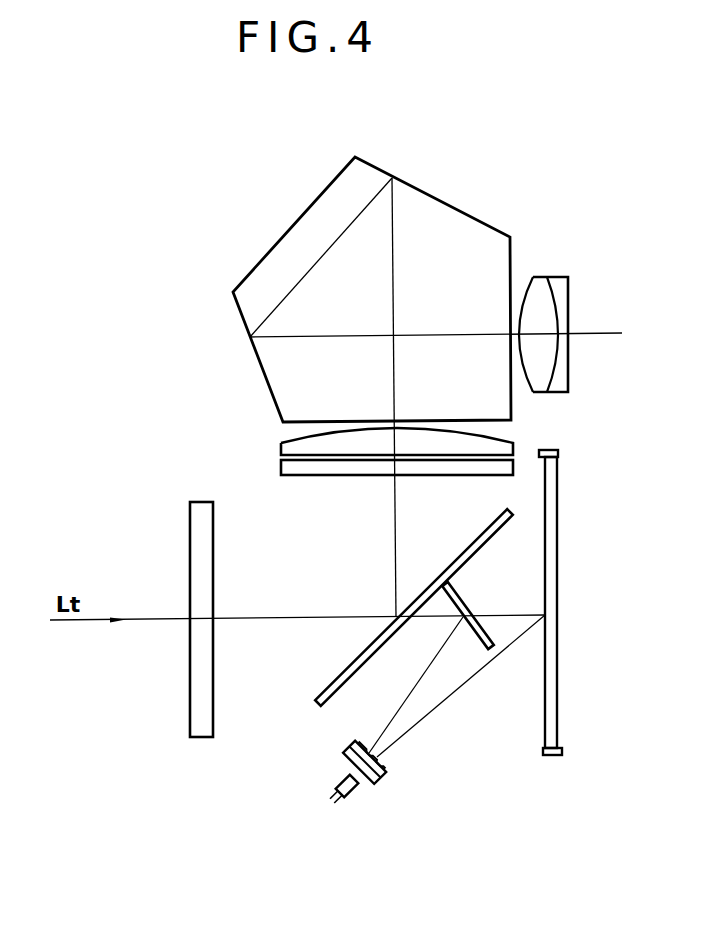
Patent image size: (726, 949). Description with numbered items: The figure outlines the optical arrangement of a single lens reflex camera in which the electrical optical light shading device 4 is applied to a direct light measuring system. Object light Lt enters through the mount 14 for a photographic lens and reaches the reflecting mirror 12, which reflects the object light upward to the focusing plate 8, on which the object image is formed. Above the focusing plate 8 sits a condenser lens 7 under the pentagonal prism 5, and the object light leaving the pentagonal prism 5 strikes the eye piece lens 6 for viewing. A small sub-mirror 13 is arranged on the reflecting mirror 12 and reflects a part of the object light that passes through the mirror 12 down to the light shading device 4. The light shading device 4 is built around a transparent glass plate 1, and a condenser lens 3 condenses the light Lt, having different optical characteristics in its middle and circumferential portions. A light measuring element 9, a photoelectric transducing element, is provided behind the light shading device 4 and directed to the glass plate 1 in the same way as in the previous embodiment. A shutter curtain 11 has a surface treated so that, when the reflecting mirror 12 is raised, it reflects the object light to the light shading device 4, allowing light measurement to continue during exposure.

The glass plate 1 is at (378, 785).
The condenser lens 3 is at (385, 770).
The electrical optical light shading device 4 is at (342, 758).
The pentagonal prism 5 is at (483, 232).
The eye piece lens 6 is at (537, 295).
The condenser lens 7 is at (500, 442).
The focusing plate 8 is at (476, 470).
The light measuring element 9 is at (347, 793).
The shutter curtain 11 is at (553, 690).
The reflecting mirror 12 is at (342, 672).
The sub-mirror 13 is at (490, 632).
The mount for a photographic lens 14 is at (193, 523).